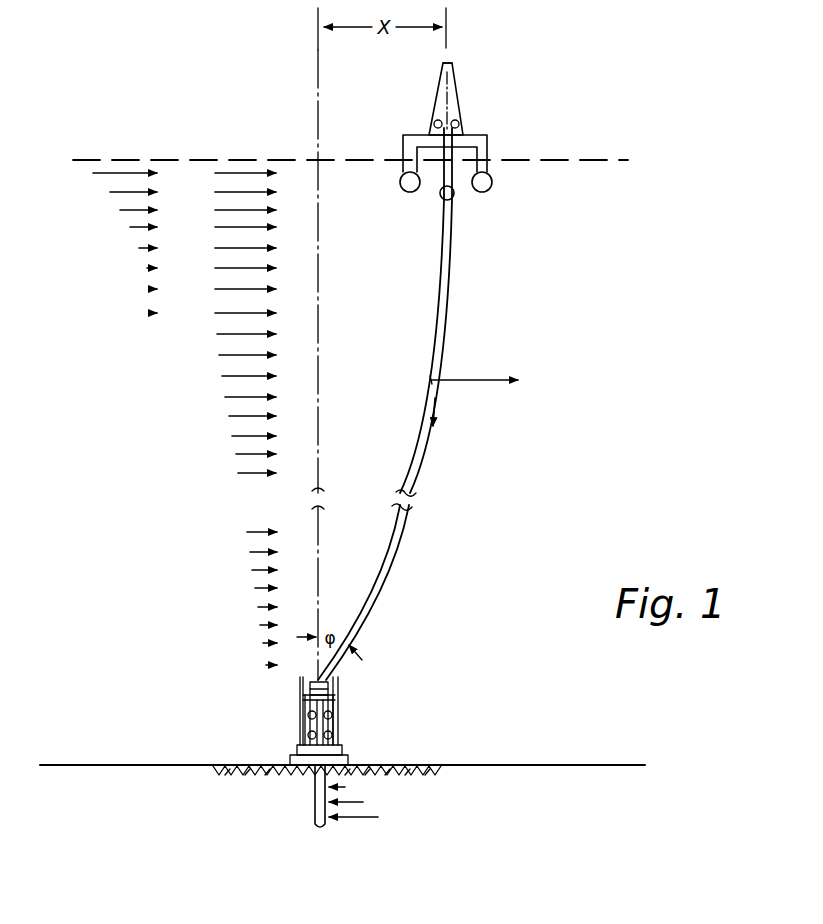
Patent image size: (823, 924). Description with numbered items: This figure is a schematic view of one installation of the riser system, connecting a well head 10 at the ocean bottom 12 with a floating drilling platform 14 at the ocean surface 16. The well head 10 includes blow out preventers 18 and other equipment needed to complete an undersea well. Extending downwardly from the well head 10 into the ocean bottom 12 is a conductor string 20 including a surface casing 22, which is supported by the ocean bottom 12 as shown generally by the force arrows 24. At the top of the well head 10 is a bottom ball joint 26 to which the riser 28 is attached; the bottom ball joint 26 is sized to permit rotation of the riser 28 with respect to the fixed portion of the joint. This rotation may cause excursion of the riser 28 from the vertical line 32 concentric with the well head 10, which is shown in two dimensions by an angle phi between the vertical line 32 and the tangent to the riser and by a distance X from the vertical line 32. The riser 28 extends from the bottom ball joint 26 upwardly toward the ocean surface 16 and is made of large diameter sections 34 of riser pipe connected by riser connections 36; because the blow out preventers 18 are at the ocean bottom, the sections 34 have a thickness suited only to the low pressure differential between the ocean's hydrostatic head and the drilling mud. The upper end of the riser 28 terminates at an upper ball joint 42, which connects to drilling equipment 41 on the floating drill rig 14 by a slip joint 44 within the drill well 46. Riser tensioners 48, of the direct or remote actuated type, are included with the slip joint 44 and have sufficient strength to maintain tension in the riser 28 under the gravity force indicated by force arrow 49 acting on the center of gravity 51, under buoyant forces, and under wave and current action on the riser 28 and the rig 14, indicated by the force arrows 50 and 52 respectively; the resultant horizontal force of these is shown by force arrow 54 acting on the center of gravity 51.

The well head 10 is at (351, 683).
The ocean bottom 12 is at (572, 765).
The floating drilling platform 14 is at (461, 90).
The ocean surface 16 is at (607, 160).
The blow out preventers 18 is at (305, 735).
The conductor string 20 is at (288, 788).
The surface casing 22 is at (315, 822).
The force arrows 24 is at (350, 827).
The bottom ball joint 26 is at (312, 676).
The riser 28 is at (421, 477).
The vertical line 32 is at (320, 414).
The large diameter sections 34 is at (371, 598).
The riser connections 36 is at (388, 571).
The drilling equipment 41 is at (459, 68).
The upper ball joint 42 is at (456, 199).
The slip joint 44 is at (458, 183).
The drill well 46 is at (432, 190).
The riser tensioners 48 is at (455, 153).
The force arrow 49 is at (437, 408).
The force arrows 50 is at (127, 297).
The center of gravity 51 is at (430, 380).
The force arrows 52 is at (220, 440).
The force arrow 54 is at (476, 380).